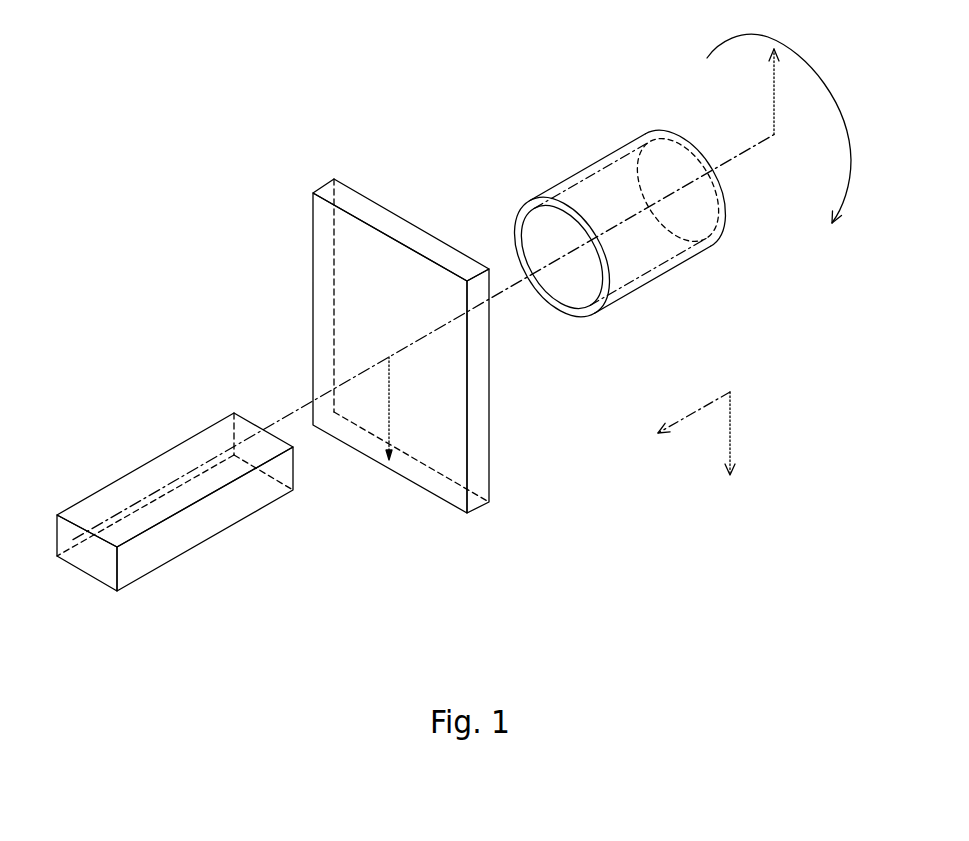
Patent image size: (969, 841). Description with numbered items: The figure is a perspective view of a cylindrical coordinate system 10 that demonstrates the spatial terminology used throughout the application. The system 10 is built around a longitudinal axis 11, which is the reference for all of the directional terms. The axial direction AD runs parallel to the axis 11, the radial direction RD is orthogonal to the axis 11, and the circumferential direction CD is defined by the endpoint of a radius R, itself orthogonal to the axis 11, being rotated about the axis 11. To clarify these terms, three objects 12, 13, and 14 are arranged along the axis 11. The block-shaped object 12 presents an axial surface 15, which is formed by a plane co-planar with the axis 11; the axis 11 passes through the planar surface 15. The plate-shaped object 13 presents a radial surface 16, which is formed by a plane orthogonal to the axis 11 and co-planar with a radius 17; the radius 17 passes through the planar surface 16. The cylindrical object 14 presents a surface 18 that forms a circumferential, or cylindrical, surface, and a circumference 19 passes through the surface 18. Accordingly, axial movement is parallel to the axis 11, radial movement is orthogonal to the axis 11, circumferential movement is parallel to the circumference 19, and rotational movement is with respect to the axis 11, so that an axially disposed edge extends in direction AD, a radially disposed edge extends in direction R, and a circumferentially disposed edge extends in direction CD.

The cylindrical coordinate system 10 is at (268, 228).
The longitudinal axis 11 is at (718, 160).
The object 12 is at (143, 580).
The object 13 is at (497, 502).
The object 14 is at (640, 287).
The axial surface 15 is at (137, 480).
The radial surface 16 is at (325, 305).
The radius 17 is at (390, 407).
The circumferential surface 18 is at (587, 167).
The circumference 19 is at (515, 220).
The radius R is at (773, 88).
The circumferential direction CD is at (810, 80).
The axial direction AD is at (695, 410).
The radial direction RD is at (730, 430).